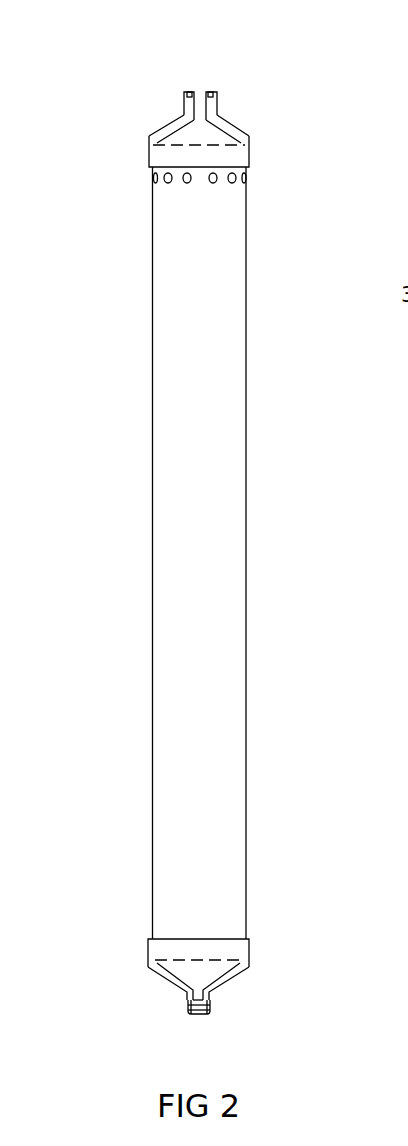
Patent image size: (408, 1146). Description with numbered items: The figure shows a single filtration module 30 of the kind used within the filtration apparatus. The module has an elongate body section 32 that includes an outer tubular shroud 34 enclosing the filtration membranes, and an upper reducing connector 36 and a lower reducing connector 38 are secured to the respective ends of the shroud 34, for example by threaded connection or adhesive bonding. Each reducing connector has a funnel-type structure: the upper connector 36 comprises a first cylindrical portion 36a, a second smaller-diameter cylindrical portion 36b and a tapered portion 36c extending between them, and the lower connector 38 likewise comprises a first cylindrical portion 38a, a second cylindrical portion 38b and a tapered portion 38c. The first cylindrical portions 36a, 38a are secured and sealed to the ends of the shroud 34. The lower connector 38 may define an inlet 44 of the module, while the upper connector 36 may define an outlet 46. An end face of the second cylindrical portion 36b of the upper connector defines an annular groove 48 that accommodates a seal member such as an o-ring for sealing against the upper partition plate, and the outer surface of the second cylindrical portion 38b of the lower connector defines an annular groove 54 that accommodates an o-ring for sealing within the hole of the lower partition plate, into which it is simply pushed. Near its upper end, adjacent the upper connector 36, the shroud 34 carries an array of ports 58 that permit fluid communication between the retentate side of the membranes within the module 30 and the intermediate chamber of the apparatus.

The filtration module 30 is at (108, 295).
The elongate body section 32 is at (145, 513).
The outer tubular shroud 34 is at (153, 432).
The upper reducing connector 36 is at (136, 126).
The first cylindrical portion of upper connector 36a is at (250, 155).
The second cylindrical portion of upper connector 36b is at (218, 105).
The tapered portion of upper connector 36c is at (238, 118).
The lower reducing connector 38 is at (140, 983).
The first cylindrical portion of lower connector 38a is at (248, 950).
The second cylindrical portion of lower connector 38b is at (217, 995).
The tapered portion of lower connector 38c is at (235, 980).
The inlet 44 is at (199, 1015).
The outlet 46 is at (199, 95).
The annular groove 48 is at (190, 92).
The annular groove 54 is at (182, 1002).
The ports 58 is at (187, 183).